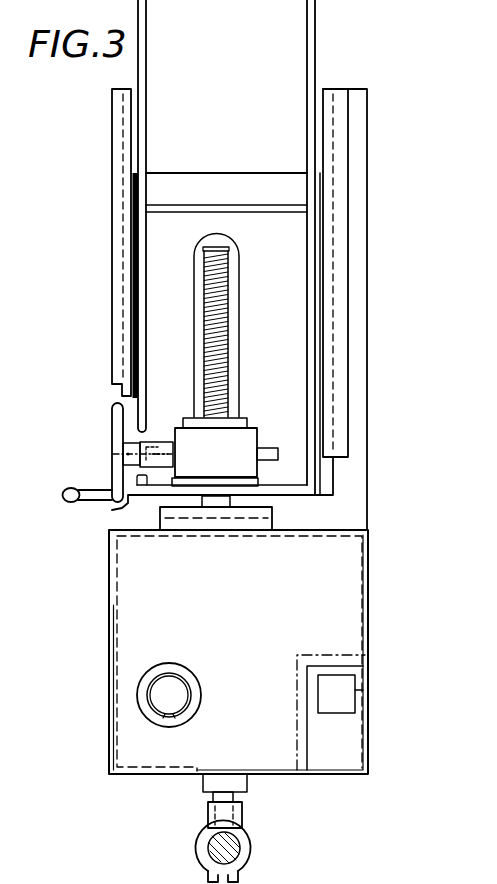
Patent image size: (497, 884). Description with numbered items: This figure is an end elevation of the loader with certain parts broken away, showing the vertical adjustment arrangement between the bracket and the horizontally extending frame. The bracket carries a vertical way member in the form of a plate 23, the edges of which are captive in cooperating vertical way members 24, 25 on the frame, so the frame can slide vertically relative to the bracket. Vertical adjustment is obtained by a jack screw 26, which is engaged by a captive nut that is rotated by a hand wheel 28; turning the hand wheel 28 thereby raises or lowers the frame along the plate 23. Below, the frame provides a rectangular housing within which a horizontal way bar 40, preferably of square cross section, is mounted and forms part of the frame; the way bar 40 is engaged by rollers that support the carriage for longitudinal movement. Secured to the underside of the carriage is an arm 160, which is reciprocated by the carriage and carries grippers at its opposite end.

The plate 23 is at (333, 478).
The vertical way member 24 is at (112, 142).
The vertical way member 25 is at (368, 146).
The jack screw 26 is at (223, 345).
The hand wheel 28 is at (110, 423).
The horizontal way bar 40 is at (343, 713).
The arm 160 is at (233, 847).